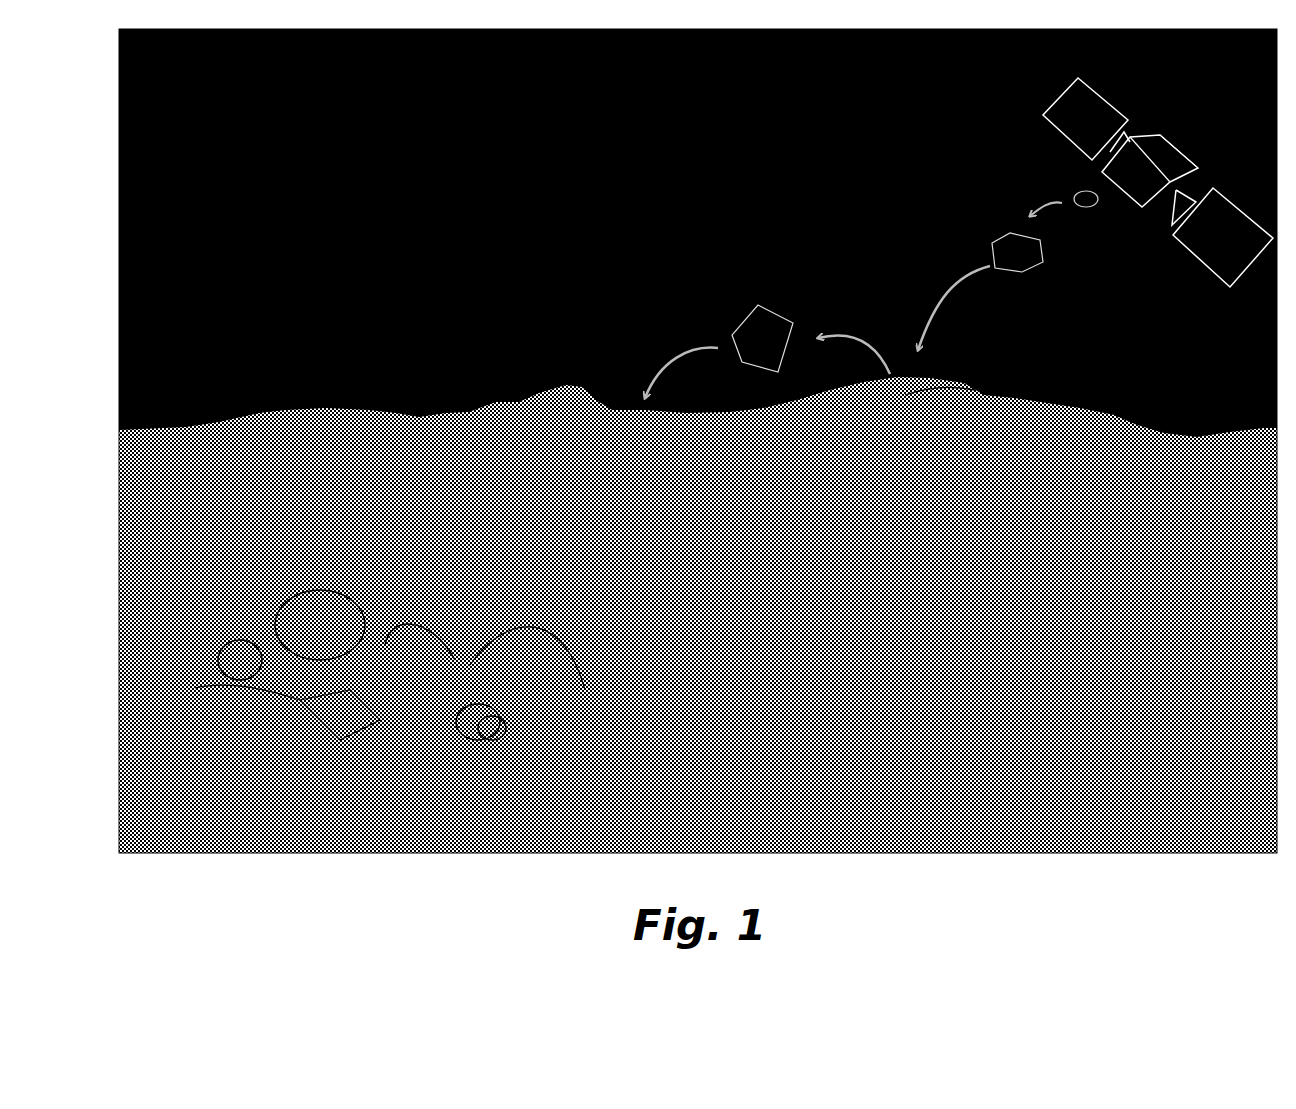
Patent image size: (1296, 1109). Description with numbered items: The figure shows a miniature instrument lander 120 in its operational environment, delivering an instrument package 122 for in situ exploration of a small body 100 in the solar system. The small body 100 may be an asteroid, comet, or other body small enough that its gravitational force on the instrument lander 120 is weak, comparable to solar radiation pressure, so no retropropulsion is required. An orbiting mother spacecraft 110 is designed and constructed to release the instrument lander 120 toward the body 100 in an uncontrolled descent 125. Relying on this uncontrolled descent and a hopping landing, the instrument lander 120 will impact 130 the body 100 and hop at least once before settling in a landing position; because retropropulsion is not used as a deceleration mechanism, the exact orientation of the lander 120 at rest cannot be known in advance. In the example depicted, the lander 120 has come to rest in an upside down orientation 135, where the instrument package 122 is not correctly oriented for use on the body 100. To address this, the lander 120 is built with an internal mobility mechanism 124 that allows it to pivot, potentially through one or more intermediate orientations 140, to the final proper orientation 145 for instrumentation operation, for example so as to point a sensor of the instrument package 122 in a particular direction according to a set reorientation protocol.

The small body 100 is at (1173, 835).
The mother spacecraft 110 is at (1112, 105).
The miniature instrument lander 120 is at (1073, 196).
The instrument package 122 is at (266, 620).
The internal mobility mechanism 124 is at (505, 737).
The uncontrolled descent 125 is at (952, 272).
The impact 130 is at (947, 423).
The upside down orientation 135 is at (545, 685).
The intermediate orientations 140 is at (320, 752).
The final proper orientation 145 is at (195, 688).